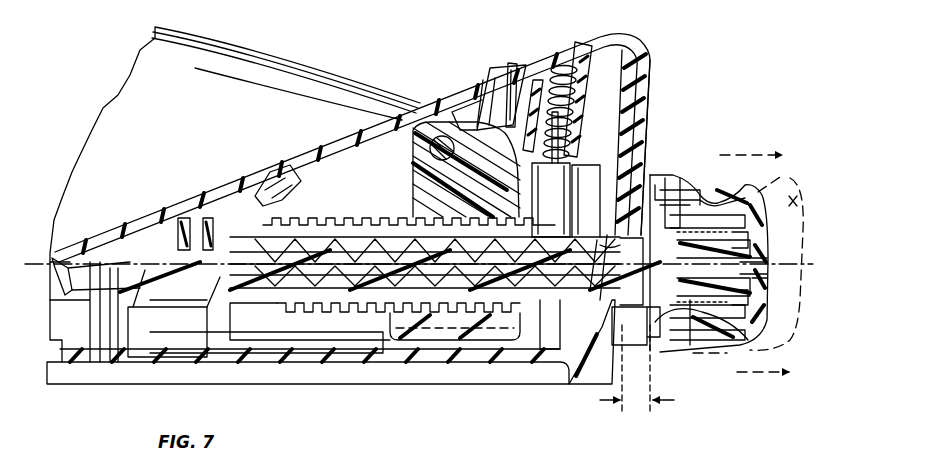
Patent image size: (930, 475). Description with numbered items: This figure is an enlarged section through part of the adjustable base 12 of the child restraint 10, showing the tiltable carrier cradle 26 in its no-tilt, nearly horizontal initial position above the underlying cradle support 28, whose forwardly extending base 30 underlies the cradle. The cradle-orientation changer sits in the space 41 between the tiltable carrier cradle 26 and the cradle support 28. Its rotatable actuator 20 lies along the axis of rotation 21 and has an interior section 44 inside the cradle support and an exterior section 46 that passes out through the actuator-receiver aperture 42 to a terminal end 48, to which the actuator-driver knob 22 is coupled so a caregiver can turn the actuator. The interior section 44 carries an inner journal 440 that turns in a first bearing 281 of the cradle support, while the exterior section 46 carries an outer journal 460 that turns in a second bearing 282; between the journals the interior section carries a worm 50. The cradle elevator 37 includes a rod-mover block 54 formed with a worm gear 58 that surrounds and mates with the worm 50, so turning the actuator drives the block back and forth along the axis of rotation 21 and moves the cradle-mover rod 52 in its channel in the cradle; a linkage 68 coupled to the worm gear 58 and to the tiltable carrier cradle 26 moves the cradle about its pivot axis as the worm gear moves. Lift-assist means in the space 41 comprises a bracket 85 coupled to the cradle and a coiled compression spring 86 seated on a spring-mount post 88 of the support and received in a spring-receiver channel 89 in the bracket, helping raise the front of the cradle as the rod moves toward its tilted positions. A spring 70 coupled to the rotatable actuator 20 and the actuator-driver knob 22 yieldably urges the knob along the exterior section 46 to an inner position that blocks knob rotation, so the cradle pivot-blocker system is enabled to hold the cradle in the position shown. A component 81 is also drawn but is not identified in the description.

The child restraint 10 is at (694, 72).
The adjustable base 12 is at (486, 72).
The rotatable actuator 20 is at (233, 233).
The axis of rotation 21 is at (33, 265).
The actuator-driver knob 22 is at (685, 171).
The tiltable carrier cradle 26 is at (549, 54).
The cradle support 28 is at (452, 372).
The base 30 is at (575, 388).
The cradle elevator 37 is at (459, 109).
The space 41 is at (304, 182).
The actuator-receiver aperture 42 is at (636, 326).
The interior section 44 is at (246, 291).
The exterior section 46 is at (655, 356).
The terminal end 48 is at (748, 279).
The worm 50 is at (343, 216).
The cradle-mover rod 52 is at (442, 136).
The rod-mover block 54 is at (408, 150).
The worm gear 58 is at (551, 200).
The linkage 68 is at (468, 105).
The spring 70 is at (694, 342).
The link 81 is at (515, 85).
The bracket 85 is at (570, 109).
The first spring 86 is at (578, 114).
The spring-mount post 88 is at (575, 130).
The spring-receiver channel 89 is at (565, 60).
The first bearing 281 is at (174, 313).
The flange 282 is at (670, 186).
The inner journal 440 is at (160, 250).
The outer journal 460 is at (600, 250).